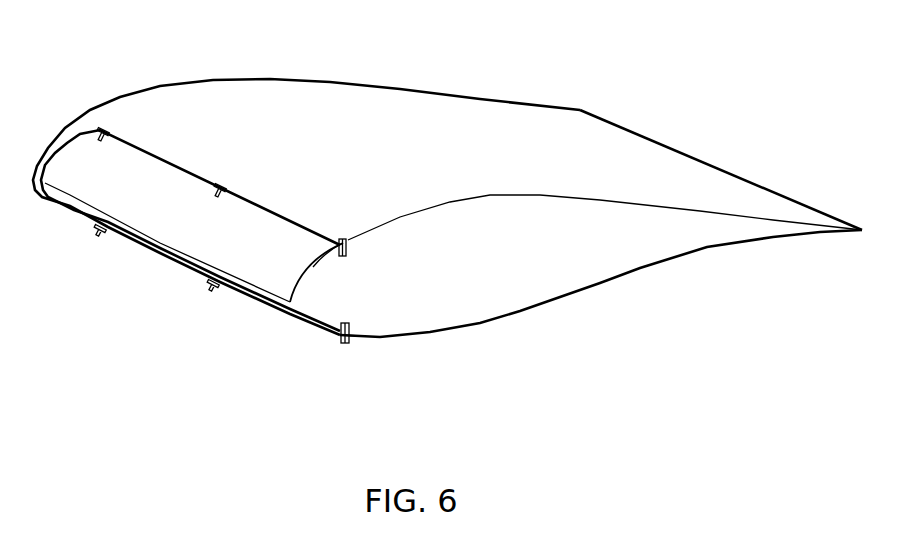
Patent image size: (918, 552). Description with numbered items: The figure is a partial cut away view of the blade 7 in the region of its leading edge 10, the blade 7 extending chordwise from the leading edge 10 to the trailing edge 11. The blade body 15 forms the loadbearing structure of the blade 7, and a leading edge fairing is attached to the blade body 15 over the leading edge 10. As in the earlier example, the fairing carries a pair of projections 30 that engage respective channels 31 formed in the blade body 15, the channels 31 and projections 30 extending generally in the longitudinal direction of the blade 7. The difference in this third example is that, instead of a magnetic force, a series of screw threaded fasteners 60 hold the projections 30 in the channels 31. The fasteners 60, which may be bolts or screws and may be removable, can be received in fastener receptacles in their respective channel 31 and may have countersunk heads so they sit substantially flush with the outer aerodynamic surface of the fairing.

The blade 7 is at (507, 117).
The leading edge 10 is at (157, 223).
The trailing edge 11 is at (710, 156).
The blade body 15 is at (565, 262).
The projections 30 is at (354, 231).
The channels 31 is at (328, 247).
The screw threaded fasteners 60 is at (104, 128).